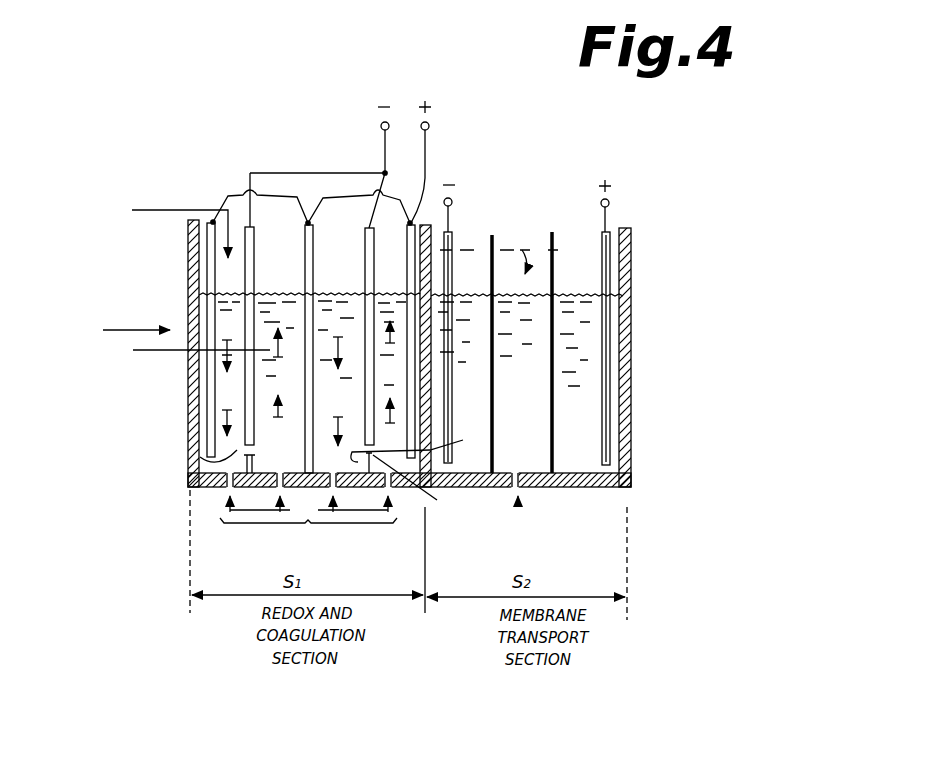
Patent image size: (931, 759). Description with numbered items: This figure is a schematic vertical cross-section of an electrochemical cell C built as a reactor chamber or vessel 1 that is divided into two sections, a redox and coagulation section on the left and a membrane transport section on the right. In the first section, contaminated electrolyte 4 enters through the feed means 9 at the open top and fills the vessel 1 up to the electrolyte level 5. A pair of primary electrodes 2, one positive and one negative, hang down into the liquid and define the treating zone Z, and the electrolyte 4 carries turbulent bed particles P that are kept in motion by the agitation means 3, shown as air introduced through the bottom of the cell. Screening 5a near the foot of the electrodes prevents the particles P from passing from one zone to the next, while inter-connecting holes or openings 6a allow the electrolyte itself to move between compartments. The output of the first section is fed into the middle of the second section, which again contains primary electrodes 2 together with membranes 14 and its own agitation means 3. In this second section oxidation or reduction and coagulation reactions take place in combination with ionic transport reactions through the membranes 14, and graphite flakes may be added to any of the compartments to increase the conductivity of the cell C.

The vessel 1 is at (192, 368).
The primary electrodes 2 is at (202, 238).
The agitation means 3 is at (554, 500).
The electrolyte 4 is at (236, 397).
The electrolyte level 5 is at (360, 292).
The screening 5a is at (200, 457).
The inter-connecting holes or openings 6a is at (355, 290).
The feed means 9 is at (175, 208).
The membranes 14 is at (552, 232).
The turbulent bed particles P is at (186, 352).
The electrochemical cell C is at (115, 328).
The treating zone Z is at (582, 393).